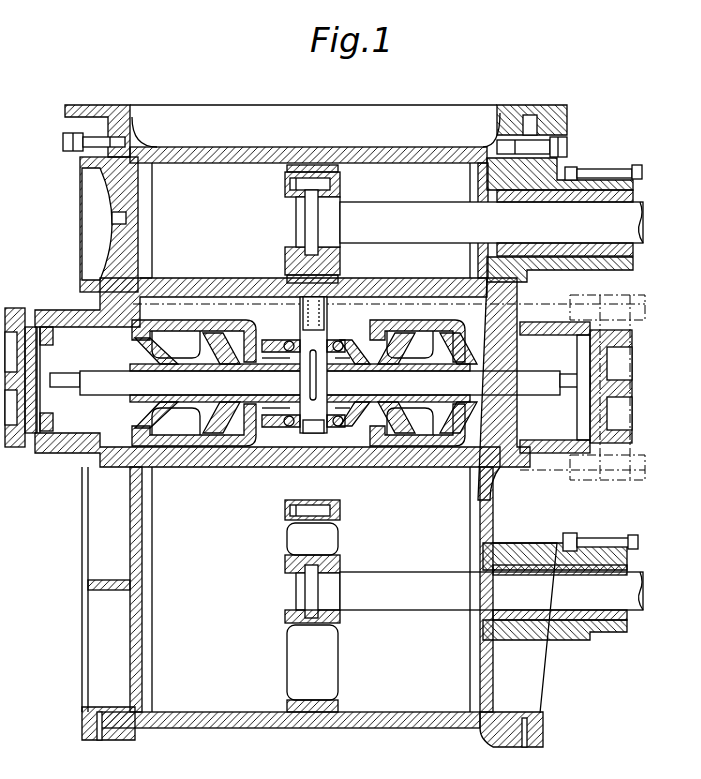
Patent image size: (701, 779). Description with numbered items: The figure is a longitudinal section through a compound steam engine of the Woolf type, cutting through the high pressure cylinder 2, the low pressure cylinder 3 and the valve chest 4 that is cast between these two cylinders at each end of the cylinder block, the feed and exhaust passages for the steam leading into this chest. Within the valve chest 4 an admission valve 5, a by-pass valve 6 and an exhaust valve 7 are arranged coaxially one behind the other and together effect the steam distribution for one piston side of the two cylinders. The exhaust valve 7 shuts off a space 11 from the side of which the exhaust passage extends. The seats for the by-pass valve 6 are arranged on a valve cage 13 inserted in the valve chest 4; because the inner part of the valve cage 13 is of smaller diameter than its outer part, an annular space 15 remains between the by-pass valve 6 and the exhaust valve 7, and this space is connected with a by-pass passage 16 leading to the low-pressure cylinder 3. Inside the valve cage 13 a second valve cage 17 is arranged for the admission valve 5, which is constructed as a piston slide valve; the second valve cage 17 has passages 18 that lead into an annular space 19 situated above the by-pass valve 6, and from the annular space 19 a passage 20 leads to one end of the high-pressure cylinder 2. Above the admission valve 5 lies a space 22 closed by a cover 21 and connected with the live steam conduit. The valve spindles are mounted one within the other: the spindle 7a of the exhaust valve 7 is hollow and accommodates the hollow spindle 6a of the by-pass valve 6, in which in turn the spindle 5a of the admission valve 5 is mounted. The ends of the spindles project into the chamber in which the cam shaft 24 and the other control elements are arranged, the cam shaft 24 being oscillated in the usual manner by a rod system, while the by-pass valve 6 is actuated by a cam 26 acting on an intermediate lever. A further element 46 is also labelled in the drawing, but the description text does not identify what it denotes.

The high pressure cylinder 2 is at (421, 158).
The low pressure cylinder 3 is at (230, 718).
The valve chest 4 is at (400, 300).
The admission valve 5 is at (540, 453).
The spindle of the admission valve 5a is at (262, 367).
The by-pass valve 6 is at (150, 413).
The hollow spindle of the by-pass valve 6a is at (300, 415).
The exhaust valve 7 is at (200, 427).
The hollow spindle of the exhaust valve 7a is at (340, 418).
The space 11 is at (233, 300).
The valve cage 13 is at (513, 470).
The annular space 15 is at (192, 300).
The by-pass passage 16 is at (153, 452).
The second valve cage 17 is at (37, 330).
The passages 18 is at (87, 440).
The annular space 19 is at (118, 452).
The passage 20 is at (158, 292).
The cover 21 is at (603, 415).
The space 22 is at (62, 330).
The cam shaft 24 is at (313, 348).
The cam 26 is at (350, 367).
The shaft 46 is at (356, 300).